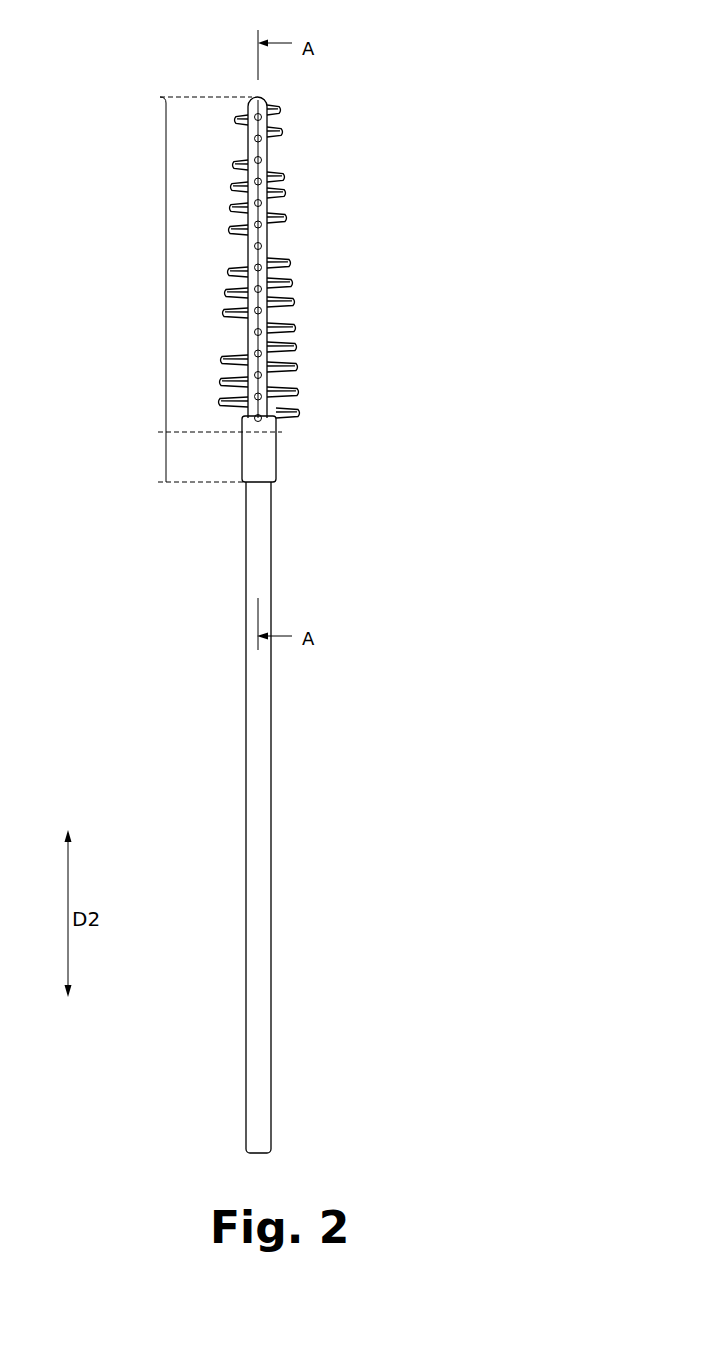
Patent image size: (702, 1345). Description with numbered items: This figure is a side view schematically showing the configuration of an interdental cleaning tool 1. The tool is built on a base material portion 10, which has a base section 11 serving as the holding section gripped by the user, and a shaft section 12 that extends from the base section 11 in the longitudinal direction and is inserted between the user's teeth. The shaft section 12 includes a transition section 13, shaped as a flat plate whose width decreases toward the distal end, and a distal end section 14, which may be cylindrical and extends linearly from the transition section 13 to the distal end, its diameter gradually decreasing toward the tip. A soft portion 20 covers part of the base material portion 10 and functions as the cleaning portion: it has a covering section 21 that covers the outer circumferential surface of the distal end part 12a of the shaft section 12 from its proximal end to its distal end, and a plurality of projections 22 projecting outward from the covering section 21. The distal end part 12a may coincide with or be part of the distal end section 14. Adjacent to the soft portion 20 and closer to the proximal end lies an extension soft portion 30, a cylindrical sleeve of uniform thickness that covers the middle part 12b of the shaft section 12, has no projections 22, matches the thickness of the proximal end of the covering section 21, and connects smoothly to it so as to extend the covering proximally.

The interdental cleaning tool 1 is at (461, 79).
The base material portion 10 is at (245, 1099).
The base section 11 is at (245, 968).
The shaft section 12 is at (246, 547).
The distal end part 12a is at (275, 296).
The middle part 12b is at (265, 455).
The transition section 13 is at (272, 728).
The distal end section 14 is at (272, 510).
The soft portion 20 is at (166, 258).
The covering section 21 is at (272, 248).
The projections 22 is at (285, 178).
The extension soft portion 30 is at (166, 451).